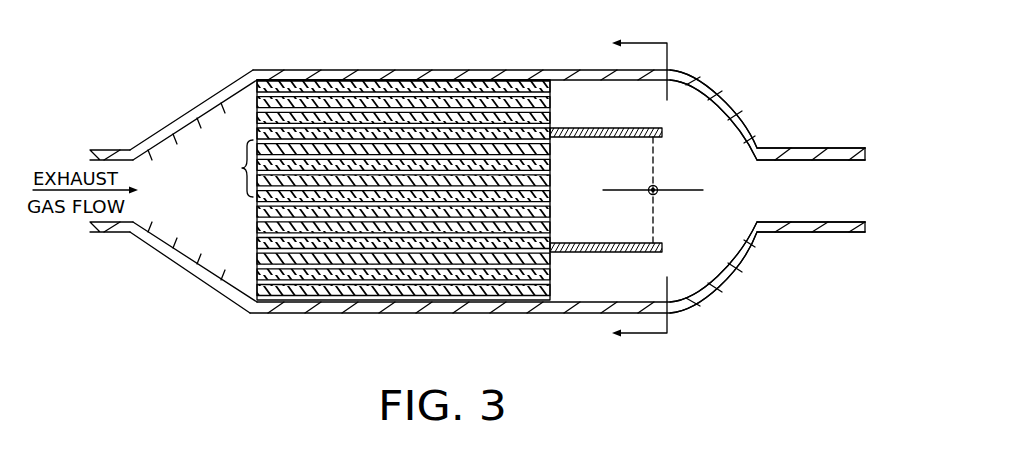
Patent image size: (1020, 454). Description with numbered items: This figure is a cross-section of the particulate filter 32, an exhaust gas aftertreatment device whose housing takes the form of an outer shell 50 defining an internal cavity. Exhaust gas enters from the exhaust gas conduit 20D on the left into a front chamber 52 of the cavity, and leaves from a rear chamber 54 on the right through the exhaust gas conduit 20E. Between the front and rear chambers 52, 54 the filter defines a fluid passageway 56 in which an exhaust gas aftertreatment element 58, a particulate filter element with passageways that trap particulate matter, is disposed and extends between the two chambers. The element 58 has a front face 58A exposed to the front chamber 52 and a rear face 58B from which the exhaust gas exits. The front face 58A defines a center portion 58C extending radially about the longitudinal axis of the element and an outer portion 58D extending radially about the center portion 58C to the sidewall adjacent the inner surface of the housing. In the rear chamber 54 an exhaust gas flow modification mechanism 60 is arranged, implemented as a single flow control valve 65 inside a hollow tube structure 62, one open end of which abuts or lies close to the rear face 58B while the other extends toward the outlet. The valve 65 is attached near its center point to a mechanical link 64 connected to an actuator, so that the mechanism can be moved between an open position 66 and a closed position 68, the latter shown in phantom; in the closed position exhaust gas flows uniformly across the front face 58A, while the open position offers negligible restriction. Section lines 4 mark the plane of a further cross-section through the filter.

The exhaust gas conduit 20D is at (113, 149).
The exhaust gas conduit 20E is at (815, 148).
The particulate filter 32 is at (516, 50).
The outer shell 50 is at (423, 71).
The front chamber 52 is at (171, 178).
The rear chamber 54 is at (688, 131).
The fluid passageway 56 is at (340, 81).
The exhaust gas aftertreatment element 58 is at (248, 84).
The front face 58A is at (213, 144).
The rear face 58B is at (561, 282).
The center portion 58C is at (241, 169).
The outer portion 58D is at (241, 109).
The exhaust gas flow modification mechanism 60 is at (699, 170).
The hollow tube structure 62 is at (572, 128).
The mechanical link 64 is at (658, 193).
The flow control valve 65 is at (695, 204).
The open position 66 is at (622, 192).
The closed position 68 is at (650, 181).
The section lines 4 is at (629, 190).